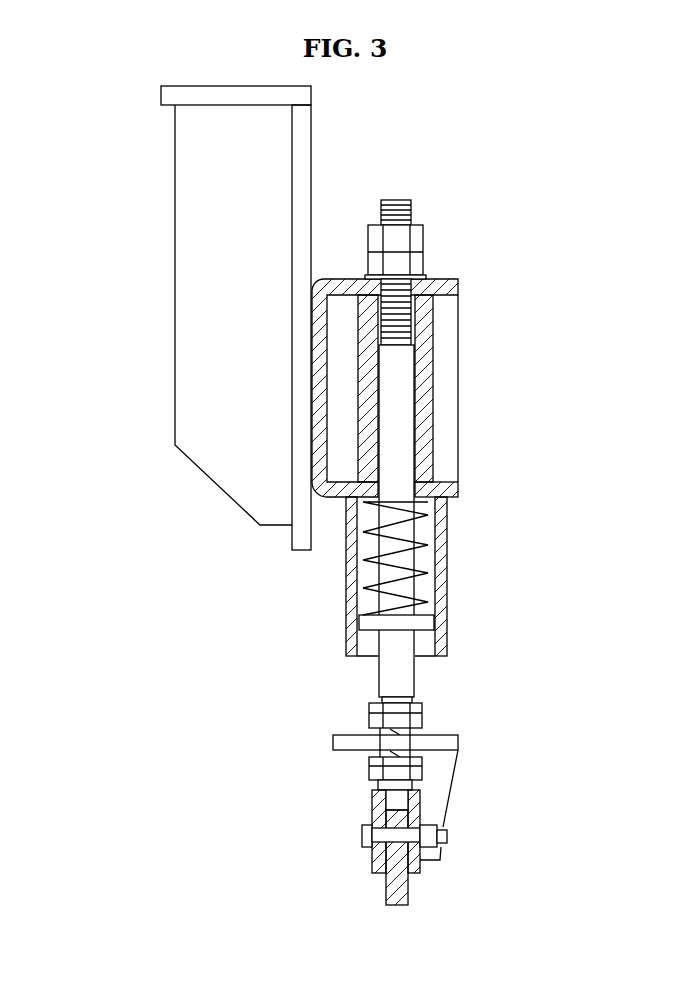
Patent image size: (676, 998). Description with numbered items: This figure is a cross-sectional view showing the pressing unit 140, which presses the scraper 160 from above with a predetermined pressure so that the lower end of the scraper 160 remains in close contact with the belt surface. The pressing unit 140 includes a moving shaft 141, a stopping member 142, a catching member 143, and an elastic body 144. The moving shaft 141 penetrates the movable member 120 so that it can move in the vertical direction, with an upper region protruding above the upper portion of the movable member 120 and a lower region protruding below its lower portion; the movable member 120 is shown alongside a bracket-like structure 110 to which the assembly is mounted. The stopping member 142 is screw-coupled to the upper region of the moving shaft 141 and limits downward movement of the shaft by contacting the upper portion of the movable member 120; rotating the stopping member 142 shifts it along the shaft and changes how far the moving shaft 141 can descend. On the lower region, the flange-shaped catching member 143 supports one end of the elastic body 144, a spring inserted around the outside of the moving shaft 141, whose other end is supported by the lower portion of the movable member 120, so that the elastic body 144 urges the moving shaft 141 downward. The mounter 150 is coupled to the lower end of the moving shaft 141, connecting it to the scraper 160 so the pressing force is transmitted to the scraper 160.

The mounting bracket 110 is at (185, 212).
The movable member 120 is at (448, 283).
The pressing unit 140 is at (498, 423).
The moving shaft 141 is at (403, 435).
The stopping member 142 is at (415, 260).
The catching member 143 is at (436, 627).
The elastic body 144 is at (430, 574).
The mounter 150 is at (444, 790).
The scraper 160 is at (402, 892).